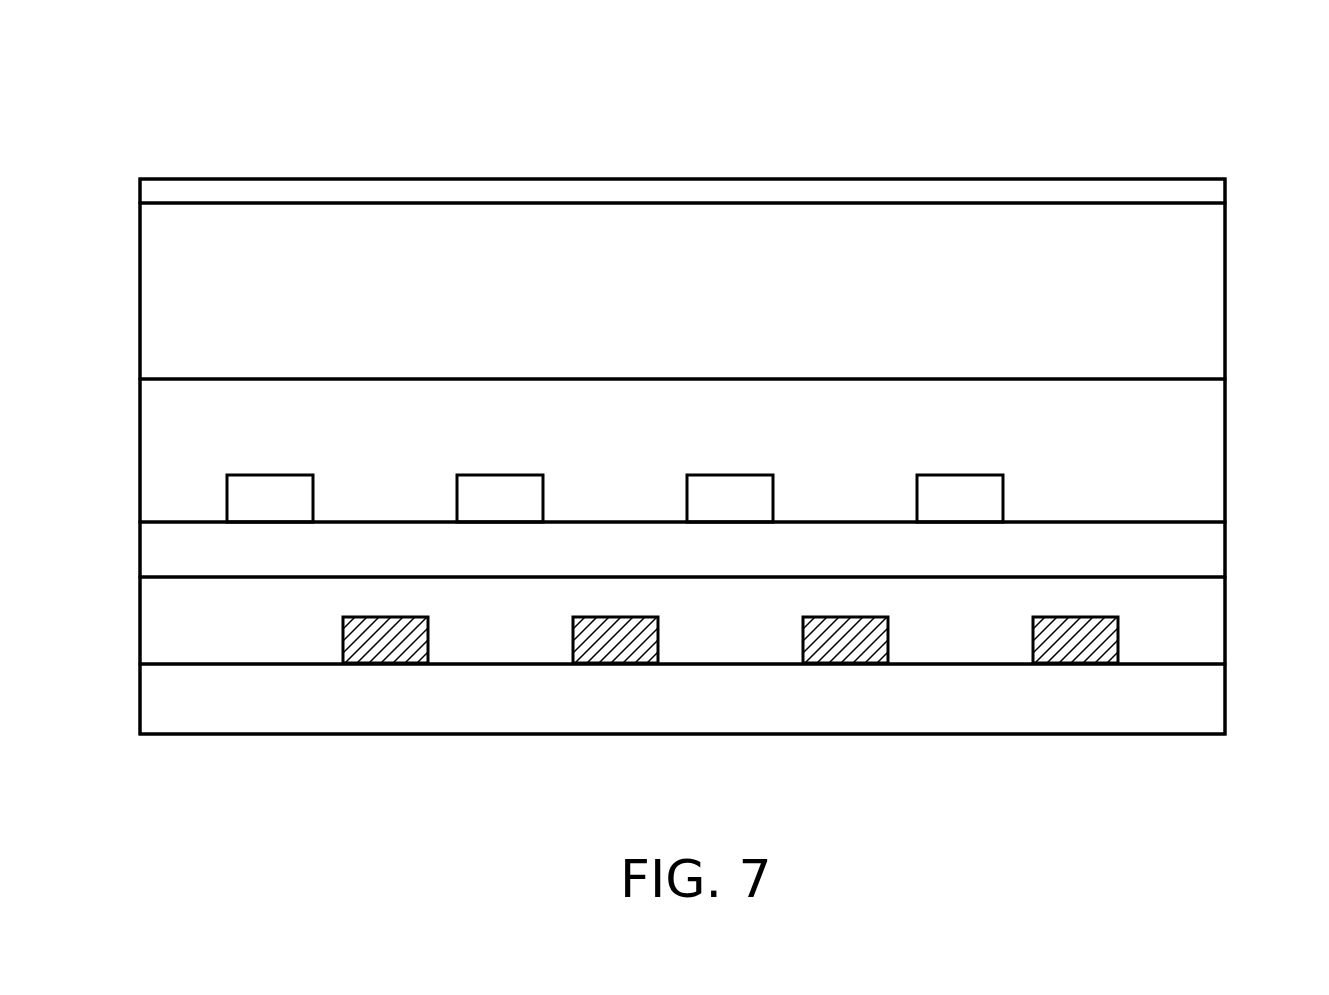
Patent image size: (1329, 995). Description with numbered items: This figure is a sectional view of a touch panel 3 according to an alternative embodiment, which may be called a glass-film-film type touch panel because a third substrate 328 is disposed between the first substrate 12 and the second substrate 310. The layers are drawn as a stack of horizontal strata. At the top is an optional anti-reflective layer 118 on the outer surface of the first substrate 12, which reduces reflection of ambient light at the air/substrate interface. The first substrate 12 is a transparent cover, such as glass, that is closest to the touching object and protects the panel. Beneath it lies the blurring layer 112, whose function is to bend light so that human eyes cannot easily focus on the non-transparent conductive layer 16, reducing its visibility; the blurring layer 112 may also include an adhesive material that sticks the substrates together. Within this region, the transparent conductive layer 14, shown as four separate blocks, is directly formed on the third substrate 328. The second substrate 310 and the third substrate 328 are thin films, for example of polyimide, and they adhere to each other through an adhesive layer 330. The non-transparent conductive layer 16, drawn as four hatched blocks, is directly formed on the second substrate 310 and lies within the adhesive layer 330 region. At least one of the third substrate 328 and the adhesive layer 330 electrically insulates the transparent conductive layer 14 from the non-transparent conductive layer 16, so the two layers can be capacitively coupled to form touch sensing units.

The touch panel 3 is at (1155, 100).
The anti-reflective layer 118 is at (1217, 193).
The first substrate 12 is at (1217, 296).
The blurring layer 112 is at (1217, 413).
The transparent conductive layer 14 is at (982, 494).
The third substrate 328 is at (1217, 554).
The adhesive layer 330 is at (1217, 594).
The non-transparent conductive layer 16 is at (1118, 634).
The second substrate 310 is at (1217, 694).